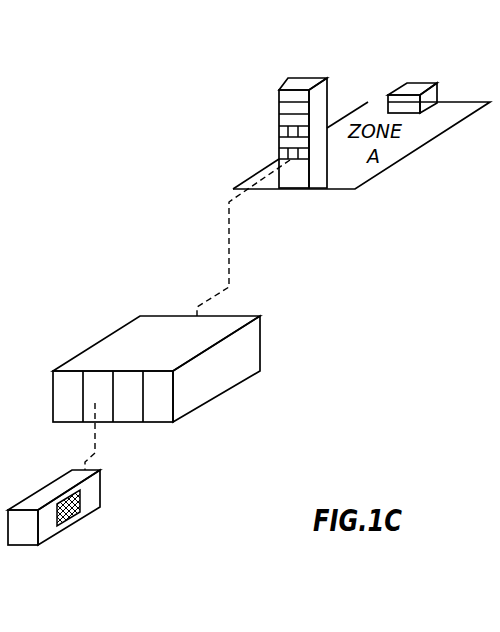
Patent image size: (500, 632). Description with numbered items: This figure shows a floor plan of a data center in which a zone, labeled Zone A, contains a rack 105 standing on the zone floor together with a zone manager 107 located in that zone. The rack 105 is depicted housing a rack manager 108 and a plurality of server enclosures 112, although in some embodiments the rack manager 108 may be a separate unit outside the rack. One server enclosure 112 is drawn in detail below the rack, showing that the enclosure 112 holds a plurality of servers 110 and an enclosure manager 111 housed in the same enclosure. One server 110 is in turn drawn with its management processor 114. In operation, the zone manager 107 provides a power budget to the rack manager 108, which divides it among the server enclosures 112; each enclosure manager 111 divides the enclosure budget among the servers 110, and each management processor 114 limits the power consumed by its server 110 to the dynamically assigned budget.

The rack 105 is at (298, 82).
The zone manager 107 is at (413, 92).
The rack manager 108 is at (287, 108).
The server 110 is at (70, 482).
The enclosure manager 111 is at (158, 410).
The server enclosure 112 is at (287, 155).
The management processor 114 is at (82, 507).